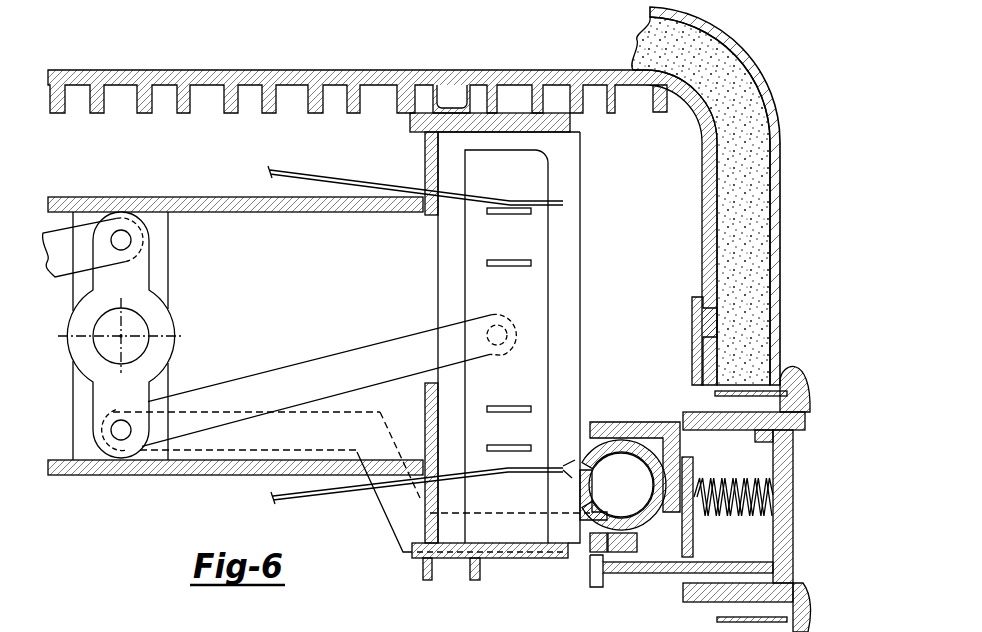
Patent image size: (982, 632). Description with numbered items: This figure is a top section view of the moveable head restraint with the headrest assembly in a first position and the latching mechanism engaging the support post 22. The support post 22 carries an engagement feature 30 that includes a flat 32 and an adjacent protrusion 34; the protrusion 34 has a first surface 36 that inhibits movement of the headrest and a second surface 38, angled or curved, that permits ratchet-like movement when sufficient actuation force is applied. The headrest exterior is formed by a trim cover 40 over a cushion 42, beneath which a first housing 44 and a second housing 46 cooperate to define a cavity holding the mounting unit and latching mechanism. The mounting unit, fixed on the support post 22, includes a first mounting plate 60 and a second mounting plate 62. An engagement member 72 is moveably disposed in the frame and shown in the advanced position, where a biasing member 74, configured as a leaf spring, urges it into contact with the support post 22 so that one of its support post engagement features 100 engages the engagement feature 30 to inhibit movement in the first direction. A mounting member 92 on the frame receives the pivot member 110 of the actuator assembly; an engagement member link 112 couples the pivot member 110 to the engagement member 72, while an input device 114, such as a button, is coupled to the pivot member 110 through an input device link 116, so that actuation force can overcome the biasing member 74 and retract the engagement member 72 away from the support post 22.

The support post 22 is at (650, 476).
The engagement feature 30 is at (577, 442).
The flat 32 is at (580, 510).
The protrusion 34 is at (552, 513).
The first surface 36 is at (567, 477).
The second surface 38 is at (565, 468).
The trim cover 40 is at (757, 42).
The cushion 42 is at (745, 145).
The first housing 44 is at (693, 323).
The second housing 46 is at (250, 72).
The first mounting plate 60 is at (597, 548).
The second mounting plate 62 is at (669, 420).
The engagement member 72 is at (520, 186).
The biasing member 74 is at (270, 172).
The mounting member 92 is at (72, 410).
The support post engagement feature 100 is at (575, 192).
The pivot member 110 is at (175, 327).
The engagement member link 112 is at (90, 262).
The input device 114 is at (797, 522).
The input device link 116 is at (392, 507).